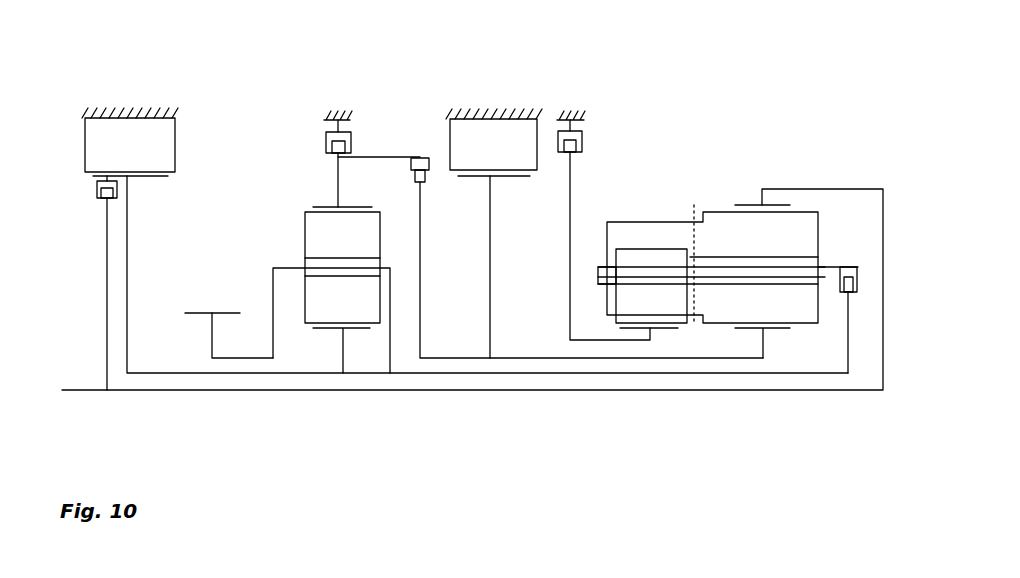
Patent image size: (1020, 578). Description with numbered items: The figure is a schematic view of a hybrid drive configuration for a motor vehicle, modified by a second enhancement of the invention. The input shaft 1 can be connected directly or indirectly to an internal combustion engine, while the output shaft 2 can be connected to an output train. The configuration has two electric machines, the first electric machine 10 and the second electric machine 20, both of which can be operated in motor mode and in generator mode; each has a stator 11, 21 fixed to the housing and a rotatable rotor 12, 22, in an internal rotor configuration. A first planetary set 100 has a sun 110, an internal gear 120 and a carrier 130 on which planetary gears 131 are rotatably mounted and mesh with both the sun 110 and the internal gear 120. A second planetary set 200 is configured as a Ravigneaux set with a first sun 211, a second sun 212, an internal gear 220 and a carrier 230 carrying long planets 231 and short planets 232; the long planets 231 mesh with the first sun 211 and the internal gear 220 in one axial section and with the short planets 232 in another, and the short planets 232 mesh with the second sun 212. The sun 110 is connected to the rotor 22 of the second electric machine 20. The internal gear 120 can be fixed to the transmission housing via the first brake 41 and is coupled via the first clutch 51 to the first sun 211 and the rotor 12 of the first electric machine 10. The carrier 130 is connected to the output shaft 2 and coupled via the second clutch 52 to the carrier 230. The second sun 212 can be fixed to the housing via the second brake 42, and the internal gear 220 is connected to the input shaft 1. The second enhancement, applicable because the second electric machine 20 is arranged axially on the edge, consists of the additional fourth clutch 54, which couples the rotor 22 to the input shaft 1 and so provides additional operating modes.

The input shaft 1 is at (80, 390).
The output shaft 2 is at (198, 313).
The first electric machine 10 is at (489, 100).
The stator 11 is at (468, 137).
The rotor 12 is at (514, 176).
The second electric machine 20 is at (130, 106).
The stator 21 is at (100, 135).
The rotor 22 is at (160, 177).
The first brake 41 is at (338, 108).
The second brake 42 is at (570, 108).
The first clutch 51 is at (420, 157).
The second clutch 52 is at (847, 265).
The fourth clutch 54 is at (102, 198).
The first planetary set 100 is at (337, 269).
The sun 110 is at (315, 328).
The internal gear 120 is at (325, 207).
The carrier 130 is at (273, 282).
The planetary gears 131 is at (365, 298).
The second planetary set 200 is at (711, 270).
The first sun 211 is at (725, 310).
The second sun 212 is at (662, 323).
The internal gear 220 is at (754, 206).
The carrier 230 is at (823, 283).
The long planets 231 is at (740, 328).
The short planets 232 is at (632, 312).